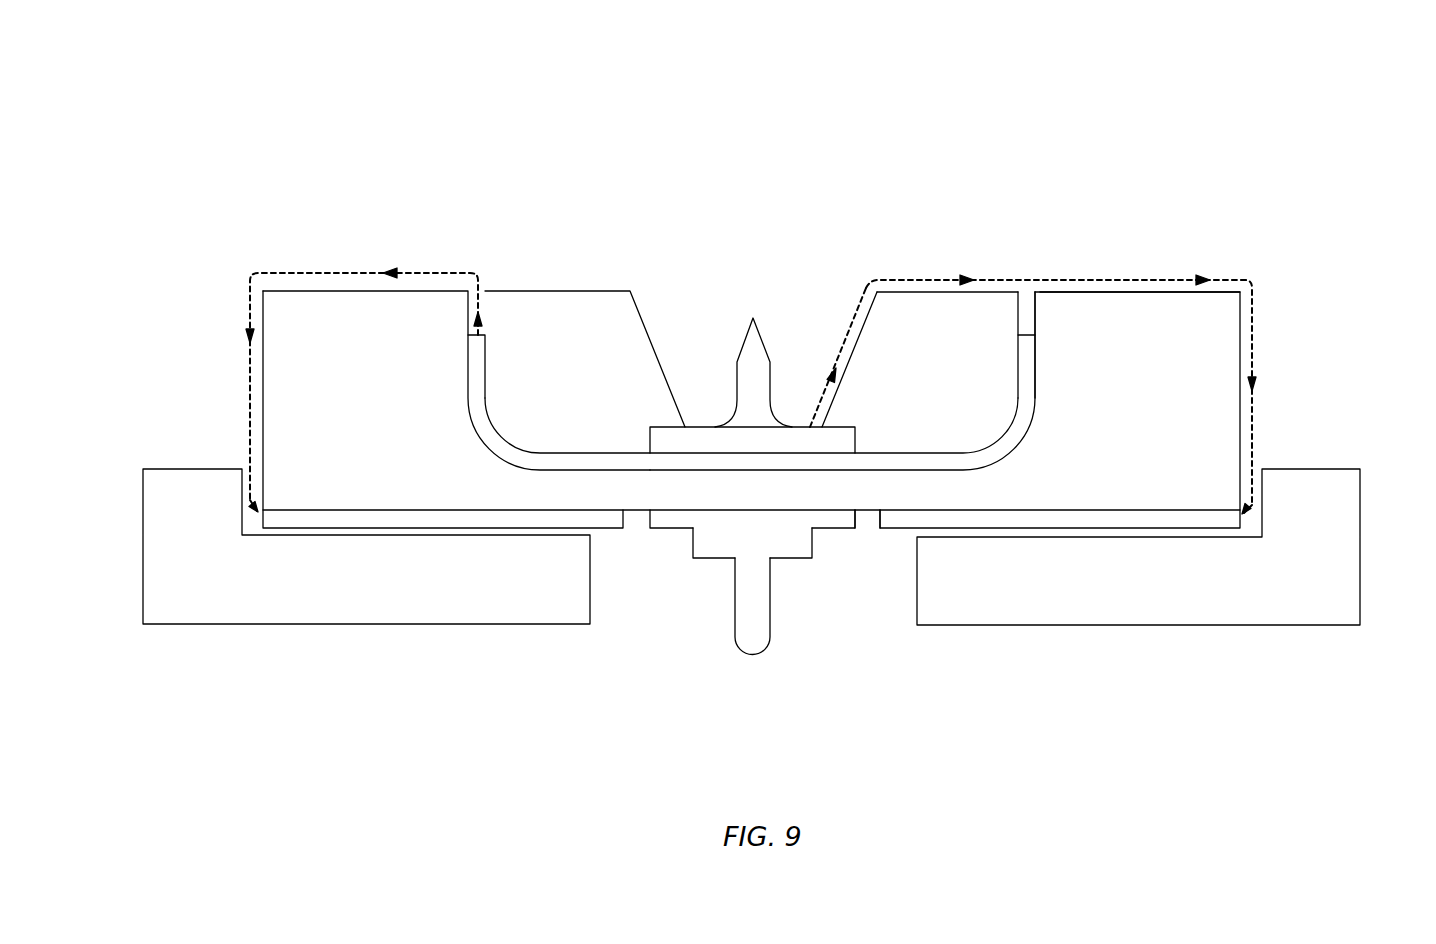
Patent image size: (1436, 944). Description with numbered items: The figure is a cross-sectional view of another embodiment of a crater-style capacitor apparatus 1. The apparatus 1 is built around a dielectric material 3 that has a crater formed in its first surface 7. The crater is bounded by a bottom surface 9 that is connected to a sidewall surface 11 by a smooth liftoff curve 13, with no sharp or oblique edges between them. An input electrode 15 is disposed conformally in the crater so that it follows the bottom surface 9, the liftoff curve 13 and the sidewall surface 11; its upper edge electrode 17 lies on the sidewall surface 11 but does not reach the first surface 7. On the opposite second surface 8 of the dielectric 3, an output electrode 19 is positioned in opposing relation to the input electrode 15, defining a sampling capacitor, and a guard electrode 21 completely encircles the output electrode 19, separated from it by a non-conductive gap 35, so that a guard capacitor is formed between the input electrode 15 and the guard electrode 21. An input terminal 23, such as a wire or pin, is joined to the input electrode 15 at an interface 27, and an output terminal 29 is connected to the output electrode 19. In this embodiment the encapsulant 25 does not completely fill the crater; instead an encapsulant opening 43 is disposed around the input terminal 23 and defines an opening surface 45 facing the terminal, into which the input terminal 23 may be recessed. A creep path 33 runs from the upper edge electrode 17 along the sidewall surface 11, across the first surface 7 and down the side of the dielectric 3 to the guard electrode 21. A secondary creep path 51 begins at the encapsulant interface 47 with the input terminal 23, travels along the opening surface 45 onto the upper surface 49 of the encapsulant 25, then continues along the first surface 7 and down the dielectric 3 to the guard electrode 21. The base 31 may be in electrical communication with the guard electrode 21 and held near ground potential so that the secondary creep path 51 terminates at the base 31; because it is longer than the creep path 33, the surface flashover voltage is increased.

The apparatus 1 is at (990, 53).
The dielectric material 3 is at (1243, 330).
The first surface 7 is at (1125, 292).
The second surface 8 is at (862, 512).
The bottom surface 9 is at (927, 470).
The sidewall surface 11 is at (1037, 318).
The liftoff curve 13 is at (1022, 430).
The input electrode 15 is at (921, 445).
The upper edge electrode 17 is at (1013, 300).
The output electrode 19 is at (830, 533).
The guard electrode 21 is at (603, 533).
The input terminal 23 is at (767, 338).
The encapsulant 25 is at (580, 312).
The interface 27 is at (648, 452).
The output terminal 29 is at (752, 657).
The base 31 is at (252, 615).
The creep path 33 is at (250, 387).
The non-conductive gap 35 is at (633, 533).
The encapsulant opening 43 is at (700, 325).
The opening surface 45 is at (655, 352).
The encapsulant interface 47 is at (828, 420).
The upper surface 49 is at (518, 290).
The secondary creep path 51 is at (1252, 425).